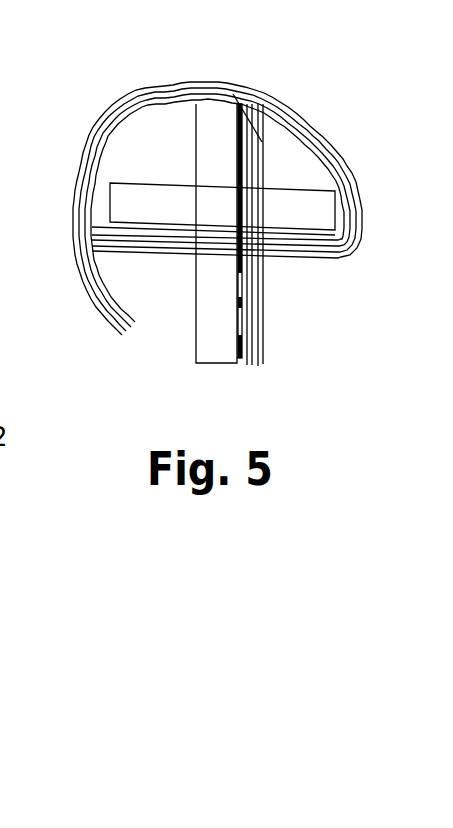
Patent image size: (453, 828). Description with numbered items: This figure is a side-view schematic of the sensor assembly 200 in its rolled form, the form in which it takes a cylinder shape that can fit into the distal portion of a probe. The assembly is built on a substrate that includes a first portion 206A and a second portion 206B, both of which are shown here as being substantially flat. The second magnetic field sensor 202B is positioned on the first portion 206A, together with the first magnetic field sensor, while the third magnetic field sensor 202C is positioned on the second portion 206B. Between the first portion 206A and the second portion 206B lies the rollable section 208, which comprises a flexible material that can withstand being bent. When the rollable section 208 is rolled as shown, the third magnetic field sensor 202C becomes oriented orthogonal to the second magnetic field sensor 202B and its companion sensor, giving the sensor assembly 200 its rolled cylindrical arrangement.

The sensor assembly 200 is at (74, 58).
The rollable section 208 is at (172, 101).
The third magnetic field sensor 202C is at (338, 212).
The second magnetic field sensor 202B is at (211, 353).
The first portion 206A is at (264, 327).
The second portion 206B is at (336, 262).